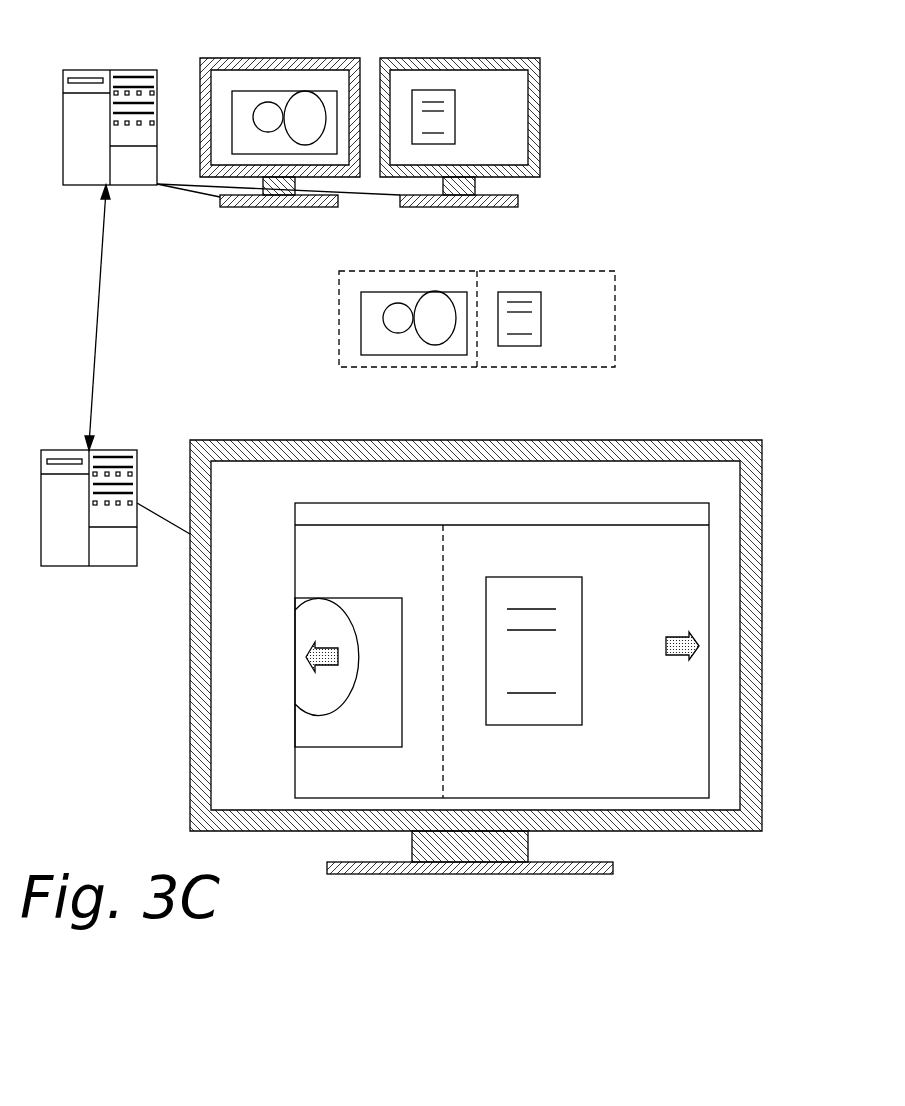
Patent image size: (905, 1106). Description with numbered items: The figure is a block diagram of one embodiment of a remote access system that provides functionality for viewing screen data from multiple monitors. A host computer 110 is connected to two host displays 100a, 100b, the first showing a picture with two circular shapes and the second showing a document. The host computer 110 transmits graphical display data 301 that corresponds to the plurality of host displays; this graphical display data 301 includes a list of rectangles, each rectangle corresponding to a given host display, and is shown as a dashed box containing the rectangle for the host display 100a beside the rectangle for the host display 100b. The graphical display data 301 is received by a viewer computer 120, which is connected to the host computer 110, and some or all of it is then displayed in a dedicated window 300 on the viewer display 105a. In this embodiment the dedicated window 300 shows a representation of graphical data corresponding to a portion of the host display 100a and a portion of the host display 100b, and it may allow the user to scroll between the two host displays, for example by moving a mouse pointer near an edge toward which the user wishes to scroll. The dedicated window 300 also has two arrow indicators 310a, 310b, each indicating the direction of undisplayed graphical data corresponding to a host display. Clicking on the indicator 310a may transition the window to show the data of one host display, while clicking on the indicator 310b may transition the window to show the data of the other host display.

The host computer 110 is at (216, 101).
The host display 100a is at (280, 106).
The host display 100b is at (460, 106).
The graphical display data 301 is at (625, 329).
The viewer computer 120 is at (101, 546).
The viewer display 105a is at (476, 688).
The dedicated window 300 is at (360, 503).
The indicator 310a is at (307, 642).
The indicator 310b is at (677, 630).